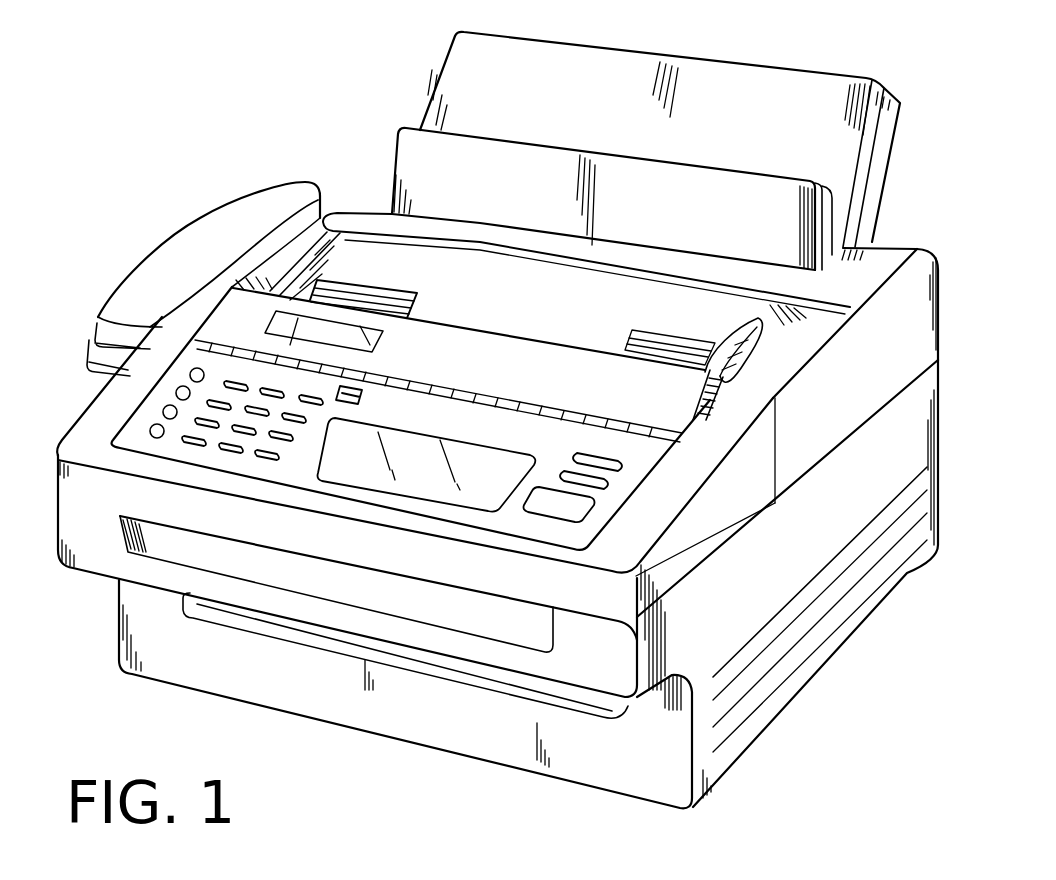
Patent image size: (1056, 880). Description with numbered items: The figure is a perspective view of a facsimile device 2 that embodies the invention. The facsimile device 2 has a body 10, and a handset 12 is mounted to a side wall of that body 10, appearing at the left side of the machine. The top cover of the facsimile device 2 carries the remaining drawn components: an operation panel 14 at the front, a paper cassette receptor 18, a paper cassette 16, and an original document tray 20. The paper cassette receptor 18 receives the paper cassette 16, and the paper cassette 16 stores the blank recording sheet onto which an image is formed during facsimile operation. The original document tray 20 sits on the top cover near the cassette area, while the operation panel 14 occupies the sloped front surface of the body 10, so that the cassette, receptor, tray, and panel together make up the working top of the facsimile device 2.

The facsimile device 2 is at (982, 383).
The body 10 is at (933, 306).
The handset 12 is at (202, 228).
The operation panel 14 is at (158, 446).
The paper cassette 16 is at (735, 88).
The paper cassette receptor 18 is at (363, 200).
The original document tray 20 is at (500, 297).